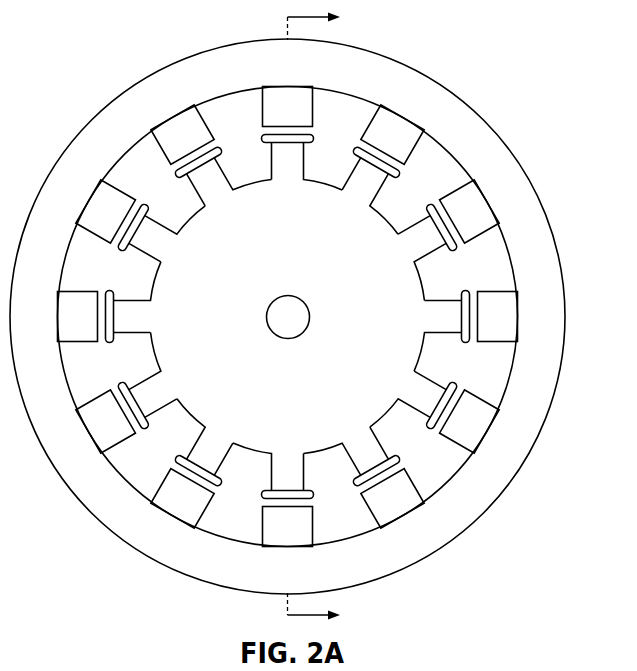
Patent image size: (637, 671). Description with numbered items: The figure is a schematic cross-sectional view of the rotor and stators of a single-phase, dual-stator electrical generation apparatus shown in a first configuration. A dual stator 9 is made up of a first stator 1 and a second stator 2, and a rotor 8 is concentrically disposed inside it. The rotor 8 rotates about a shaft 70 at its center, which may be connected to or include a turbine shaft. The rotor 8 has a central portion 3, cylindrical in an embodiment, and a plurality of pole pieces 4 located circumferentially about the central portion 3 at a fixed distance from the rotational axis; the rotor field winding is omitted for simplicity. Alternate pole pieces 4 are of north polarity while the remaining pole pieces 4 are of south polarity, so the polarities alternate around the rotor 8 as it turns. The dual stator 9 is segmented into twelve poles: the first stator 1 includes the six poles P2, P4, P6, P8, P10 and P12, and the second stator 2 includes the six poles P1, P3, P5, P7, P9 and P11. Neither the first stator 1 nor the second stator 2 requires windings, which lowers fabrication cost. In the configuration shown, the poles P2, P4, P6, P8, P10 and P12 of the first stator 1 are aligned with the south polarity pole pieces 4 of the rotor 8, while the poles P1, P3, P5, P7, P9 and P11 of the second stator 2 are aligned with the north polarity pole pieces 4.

The first stator 1 is at (288, 276).
The second stator 2 is at (487, 113).
The central portion 3 is at (97, 97).
The pole pieces 4 is at (377, 193).
The rotor 8 is at (281, 394).
The dual stator 9 is at (181, 45).
The shaft 70 is at (274, 328).
The pole P1 is at (288, 107).
The pole P2 is at (392, 135).
The pole P3 is at (470, 211).
The pole P4 is at (498, 317).
The pole P5 is at (470, 421).
The pole P6 is at (392, 499).
The pole P7 is at (288, 527).
The pole P8 is at (182, 499).
The pole P9 is at (106, 421).
The pole P10 is at (78, 317).
The pole P11 is at (106, 211).
The pole P12 is at (182, 135).